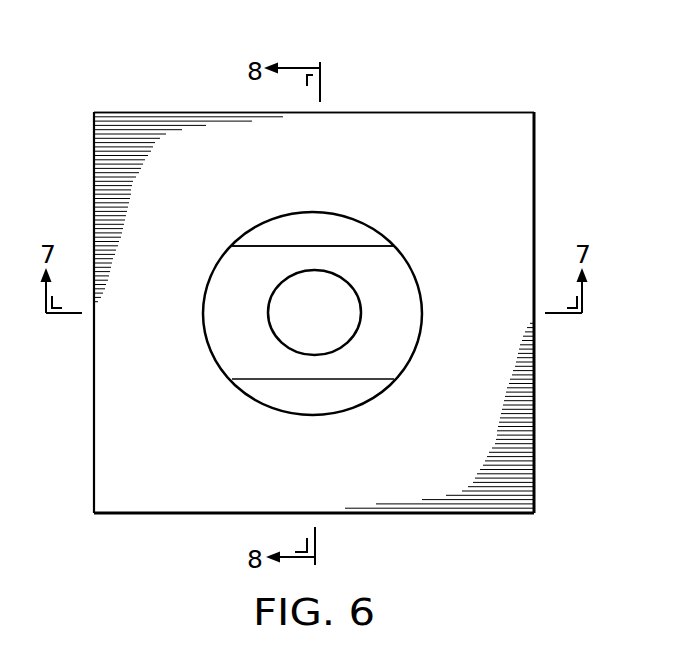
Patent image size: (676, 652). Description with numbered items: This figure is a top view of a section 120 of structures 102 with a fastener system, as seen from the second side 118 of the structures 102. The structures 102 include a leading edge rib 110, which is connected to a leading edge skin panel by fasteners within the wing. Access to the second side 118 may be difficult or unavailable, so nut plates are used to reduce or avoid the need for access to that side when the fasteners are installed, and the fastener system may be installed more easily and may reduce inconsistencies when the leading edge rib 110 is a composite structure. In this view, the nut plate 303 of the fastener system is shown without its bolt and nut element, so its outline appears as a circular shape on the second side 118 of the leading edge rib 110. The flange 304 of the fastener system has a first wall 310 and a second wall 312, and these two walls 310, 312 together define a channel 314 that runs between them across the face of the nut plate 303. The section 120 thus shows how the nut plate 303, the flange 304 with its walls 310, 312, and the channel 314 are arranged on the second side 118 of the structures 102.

The structures 102 is at (185, 68).
The section 120 is at (445, 90).
The leading edge rib 110 is at (92, 390).
The second side 118 is at (527, 388).
The nut plate 303 is at (340, 215).
The flange 304 is at (260, 222).
The wall 310 is at (312, 223).
The wall 312 is at (315, 403).
The channel 314 is at (215, 310).